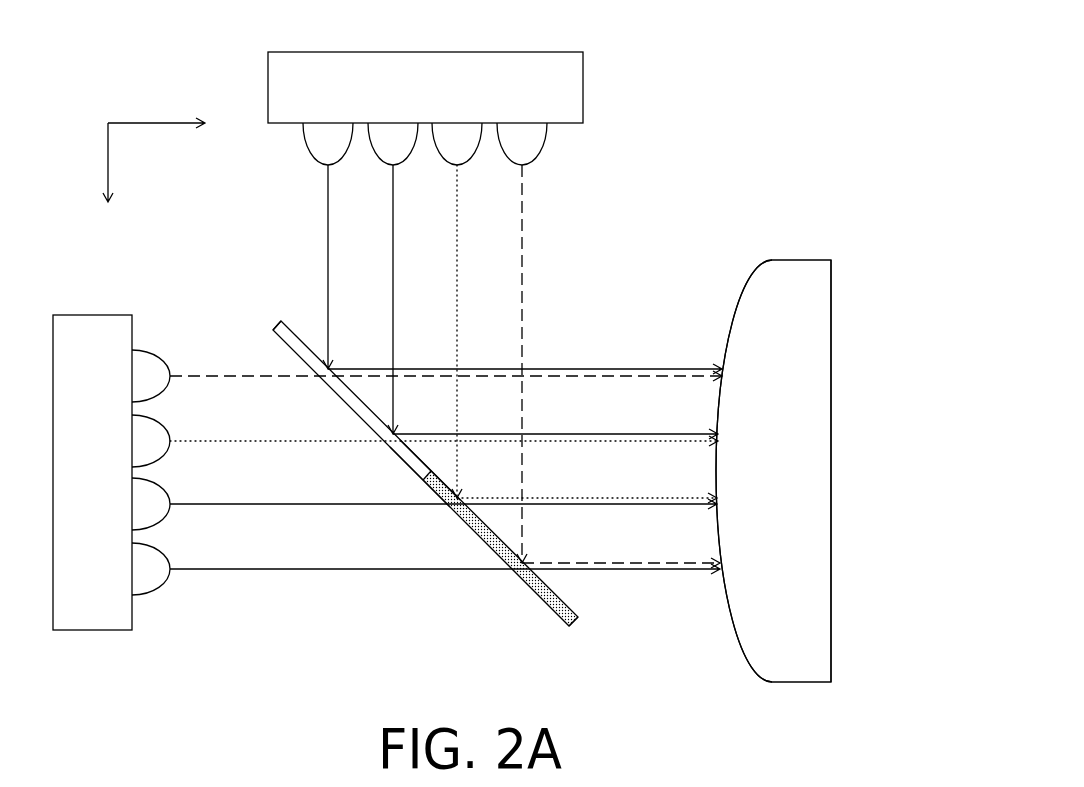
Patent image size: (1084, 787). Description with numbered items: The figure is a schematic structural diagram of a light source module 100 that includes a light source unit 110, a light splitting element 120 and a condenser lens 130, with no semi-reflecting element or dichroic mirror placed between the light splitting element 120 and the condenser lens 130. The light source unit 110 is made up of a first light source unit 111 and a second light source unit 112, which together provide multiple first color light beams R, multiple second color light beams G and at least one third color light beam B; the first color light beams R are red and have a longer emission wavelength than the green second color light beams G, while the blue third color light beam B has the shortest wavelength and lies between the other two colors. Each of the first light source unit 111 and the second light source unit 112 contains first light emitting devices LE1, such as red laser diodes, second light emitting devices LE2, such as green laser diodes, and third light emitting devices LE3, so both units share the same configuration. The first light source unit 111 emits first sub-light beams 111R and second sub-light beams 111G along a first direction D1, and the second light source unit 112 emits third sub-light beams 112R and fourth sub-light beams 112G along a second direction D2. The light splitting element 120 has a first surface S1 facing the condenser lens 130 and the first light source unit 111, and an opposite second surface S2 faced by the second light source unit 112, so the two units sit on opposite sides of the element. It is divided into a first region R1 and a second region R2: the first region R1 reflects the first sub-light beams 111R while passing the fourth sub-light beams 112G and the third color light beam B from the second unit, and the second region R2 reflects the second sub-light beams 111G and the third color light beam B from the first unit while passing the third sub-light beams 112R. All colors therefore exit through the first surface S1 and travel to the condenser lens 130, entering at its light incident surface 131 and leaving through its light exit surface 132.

The light source module 100 is at (803, 731).
The light source unit 110 is at (753, 2).
The first light source unit 111 is at (570, 92).
The second light source unit 112 is at (87, 328).
The first sub-light beams 111R is at (395, 262).
The third sub-light beams 112R is at (357, 568).
The second sub-light beams 111G is at (525, 258).
The fourth sub-light beams 112G is at (238, 373).
The third color light beam B is at (462, 290).
The first color light beams R is at (753, 70).
The second color light beams G is at (753, 135).
The first light emitting devices LE1 is at (385, 146).
The second light emitting devices LE2 is at (533, 143).
The third light emitting devices LE3 is at (468, 148).
The light splitting element 120 is at (548, 649).
The first region R1 is at (295, 322).
The second region R2 is at (533, 594).
The first surface S1 is at (422, 446).
The second surface S2 is at (398, 469).
The condenser lens 130 is at (787, 270).
The light incident surface 131 is at (728, 634).
The light exit surface 132 is at (830, 639).
The first direction D1 is at (96, 162).
The second direction D2 is at (156, 113).